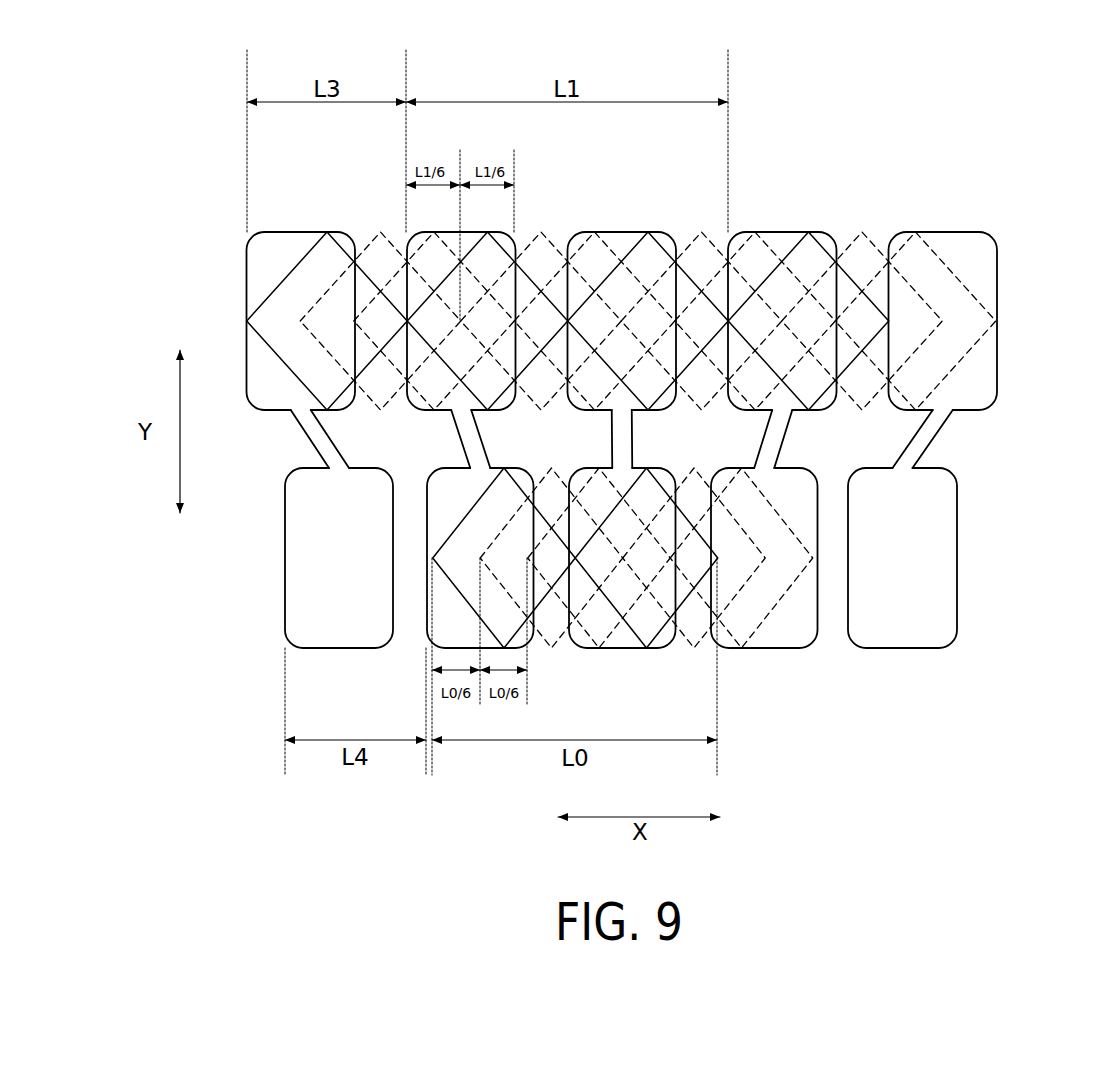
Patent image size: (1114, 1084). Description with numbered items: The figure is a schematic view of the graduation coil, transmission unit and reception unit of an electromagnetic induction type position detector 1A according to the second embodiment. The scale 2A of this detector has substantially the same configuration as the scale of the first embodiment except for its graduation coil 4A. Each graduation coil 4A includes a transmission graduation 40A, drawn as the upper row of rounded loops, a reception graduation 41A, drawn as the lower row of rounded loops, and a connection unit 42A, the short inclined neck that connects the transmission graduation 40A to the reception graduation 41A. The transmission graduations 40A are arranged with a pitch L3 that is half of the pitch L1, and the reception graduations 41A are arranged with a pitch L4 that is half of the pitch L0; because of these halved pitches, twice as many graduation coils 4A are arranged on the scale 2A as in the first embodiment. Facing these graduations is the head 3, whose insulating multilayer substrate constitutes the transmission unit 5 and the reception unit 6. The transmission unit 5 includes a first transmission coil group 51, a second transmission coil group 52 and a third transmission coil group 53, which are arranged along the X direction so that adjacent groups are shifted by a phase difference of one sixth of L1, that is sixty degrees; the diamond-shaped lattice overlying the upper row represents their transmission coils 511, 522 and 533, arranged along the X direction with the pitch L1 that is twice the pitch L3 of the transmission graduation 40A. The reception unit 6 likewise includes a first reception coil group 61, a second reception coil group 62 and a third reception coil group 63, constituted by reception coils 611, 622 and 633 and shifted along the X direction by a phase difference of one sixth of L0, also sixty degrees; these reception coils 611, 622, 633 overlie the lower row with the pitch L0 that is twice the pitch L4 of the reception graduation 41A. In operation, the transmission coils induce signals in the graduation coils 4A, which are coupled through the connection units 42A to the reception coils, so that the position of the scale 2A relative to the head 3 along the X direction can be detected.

The electromagnetic induction type position detector 1A is at (953, 137).
The scale 2A is at (253, 600).
The head 3 is at (908, 153).
The graduation coil 4A is at (1023, 318).
The transmission unit 5 is at (850, 193).
The first transmission coil group 51 is at (857, 257).
The second transmission coil group 52 is at (370, 228).
The third transmission coil group 53 is at (968, 267).
The transmission coil 511 is at (515, 232).
The transmission coil 522 is at (556, 236).
The transmission coil 533 is at (627, 236).
The reception unit 6 is at (785, 630).
The first reception coil group 61 is at (462, 492).
The second reception coil group 62 is at (703, 465).
The third reception coil group 63 is at (774, 488).
The reception coil 611 is at (664, 650).
The reception coil 622 is at (718, 656).
The reception coil 633 is at (772, 652).
The transmission graduation 40A is at (304, 232).
The reception graduation 41A is at (315, 650).
The connection unit 42A is at (303, 435).